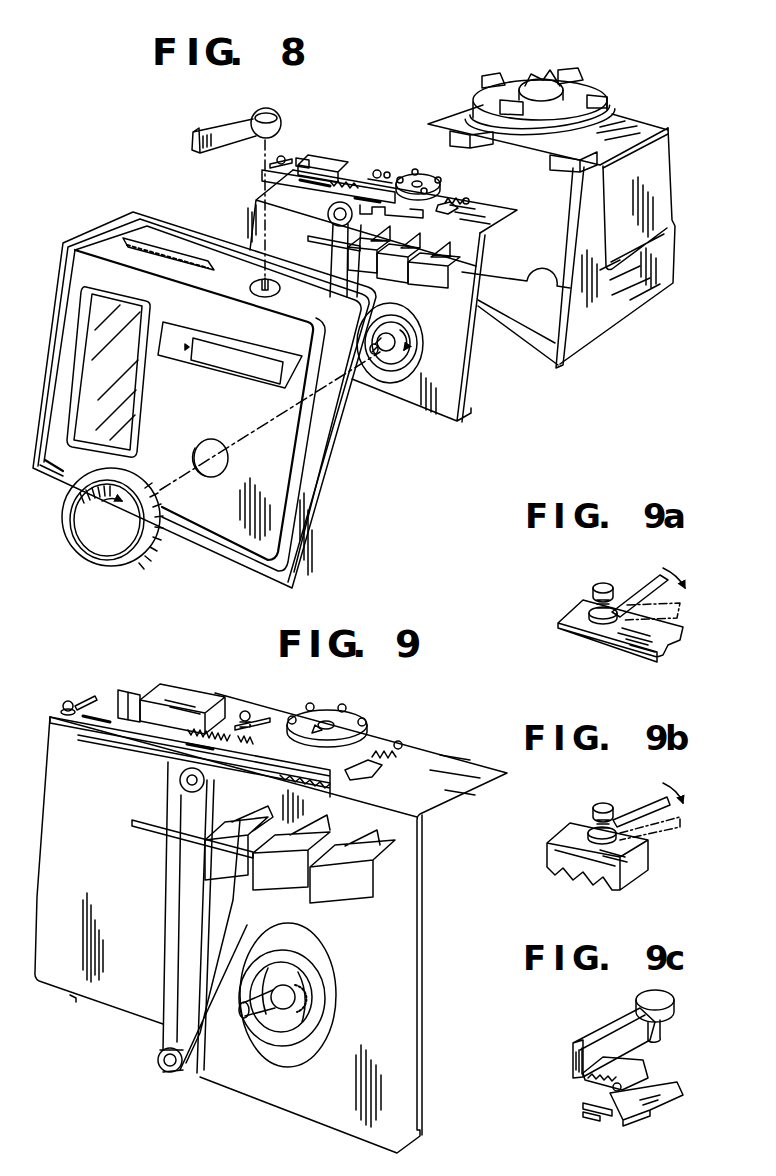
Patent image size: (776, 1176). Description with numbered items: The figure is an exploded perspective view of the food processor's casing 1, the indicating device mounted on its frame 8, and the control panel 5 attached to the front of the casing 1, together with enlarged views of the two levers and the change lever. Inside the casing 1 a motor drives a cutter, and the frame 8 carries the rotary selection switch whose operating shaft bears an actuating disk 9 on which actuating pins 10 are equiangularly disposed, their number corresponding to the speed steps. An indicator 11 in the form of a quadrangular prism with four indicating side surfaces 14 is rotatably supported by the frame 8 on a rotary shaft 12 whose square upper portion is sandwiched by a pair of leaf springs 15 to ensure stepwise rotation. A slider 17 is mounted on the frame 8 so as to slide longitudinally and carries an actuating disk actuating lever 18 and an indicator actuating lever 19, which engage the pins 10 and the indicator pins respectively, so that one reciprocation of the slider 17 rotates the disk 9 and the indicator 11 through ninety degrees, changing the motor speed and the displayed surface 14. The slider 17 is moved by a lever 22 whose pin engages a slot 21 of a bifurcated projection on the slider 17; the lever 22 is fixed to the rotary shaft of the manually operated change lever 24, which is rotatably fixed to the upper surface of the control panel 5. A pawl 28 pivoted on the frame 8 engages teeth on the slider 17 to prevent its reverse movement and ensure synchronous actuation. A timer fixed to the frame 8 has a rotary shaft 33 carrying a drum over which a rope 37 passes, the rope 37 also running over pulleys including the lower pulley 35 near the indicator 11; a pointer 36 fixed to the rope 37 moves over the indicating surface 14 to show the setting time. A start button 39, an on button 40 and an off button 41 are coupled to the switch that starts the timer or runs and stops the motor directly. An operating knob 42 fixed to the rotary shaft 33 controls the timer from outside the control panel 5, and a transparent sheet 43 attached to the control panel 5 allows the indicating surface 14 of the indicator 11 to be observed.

In FIG. 8, the casing 1 is at (587, 328).
In FIG. 8, the control panel 5 is at (83, 270).
In FIG. 8, the frame 8 is at (450, 377).
In FIG. 9, the frame 8 is at (440, 767).
In FIG. 8, the actuating disk 9 is at (445, 184).
In FIG. 9, the actuating disk 9 is at (337, 717).
In FIG. 8, the actuating pins 10 is at (420, 176).
In FIG. 9, the actuating pins 10 is at (317, 708).
In FIG. 9, the indicator 11 is at (57, 967).
In FIG. 8, the rotary shaft 12 is at (318, 152).
In FIG. 9, the rotary shaft 12 is at (152, 697).
In FIG. 9, the indicating side surface 14 is at (117, 995).
In FIG. 8, the leaf springs 15 is at (318, 150).
In FIG. 9, the leaf springs 15 is at (127, 685).
In FIG. 8, the slider 17 is at (285, 178).
In FIG. 9, the slider 17 is at (90, 720).
In FIG. 9A, the slider 17 is at (603, 627).
In FIG. 9B, the slider 17 is at (563, 837).
In FIG. 9C, the slider 17 is at (655, 1100).
In FIG. 8, the actuating disk actuating lever 18 is at (372, 168).
In FIG. 9, the actuating disk actuating lever 18 is at (250, 714).
In FIG. 9B, the actuating disk actuating lever 18 is at (637, 807).
In FIG. 8, the indicator actuating lever 19 is at (275, 160).
In FIG. 9, the indicator actuating lever 19 is at (82, 700).
In FIG. 9A, the indicator actuating lever 19 is at (643, 577).
In FIG. 9C, the slot 21 is at (610, 1110).
In FIG. 9C, the lever 22 is at (627, 1065).
In FIG. 8, the change lever 24 is at (222, 124).
In FIG. 9C, the change lever 24 is at (617, 1023).
In FIG. 8, the pawl 28 is at (467, 197).
In FIG. 9, the pawl 28 is at (360, 777).
In FIG. 8, the rotary shaft 33 is at (383, 360).
In FIG. 9, the rotary shaft 33 is at (277, 1062).
In FIG. 9, the pulley 35 is at (167, 1070).
In FIG. 8, the pointer 36 is at (315, 240).
In FIG. 9, the pointer 36 is at (160, 835).
In FIG. 9, the rope 37 is at (222, 1010).
In FIG. 8, the start button 39 is at (460, 270).
In FIG. 9, the start button 39 is at (360, 903).
In FIG. 9, the on button 40 is at (287, 883).
In FIG. 9, the off button 41 is at (237, 870).
In FIG. 8, the operating knob 42 is at (83, 533).
In FIG. 8, the transparent sheet 43 is at (90, 342).